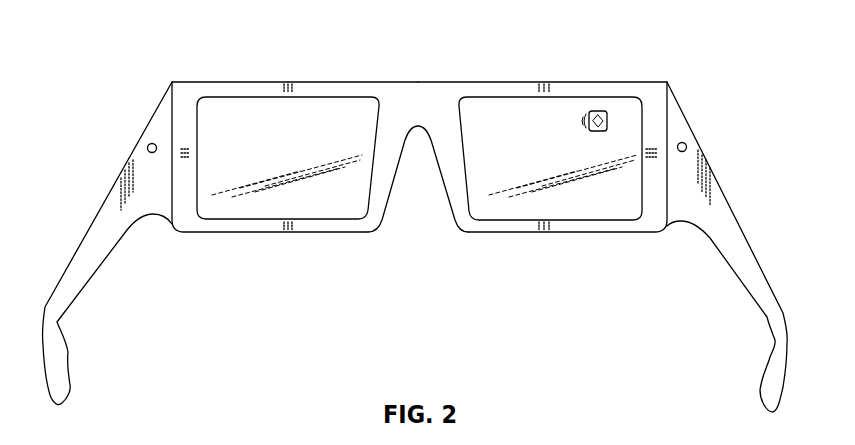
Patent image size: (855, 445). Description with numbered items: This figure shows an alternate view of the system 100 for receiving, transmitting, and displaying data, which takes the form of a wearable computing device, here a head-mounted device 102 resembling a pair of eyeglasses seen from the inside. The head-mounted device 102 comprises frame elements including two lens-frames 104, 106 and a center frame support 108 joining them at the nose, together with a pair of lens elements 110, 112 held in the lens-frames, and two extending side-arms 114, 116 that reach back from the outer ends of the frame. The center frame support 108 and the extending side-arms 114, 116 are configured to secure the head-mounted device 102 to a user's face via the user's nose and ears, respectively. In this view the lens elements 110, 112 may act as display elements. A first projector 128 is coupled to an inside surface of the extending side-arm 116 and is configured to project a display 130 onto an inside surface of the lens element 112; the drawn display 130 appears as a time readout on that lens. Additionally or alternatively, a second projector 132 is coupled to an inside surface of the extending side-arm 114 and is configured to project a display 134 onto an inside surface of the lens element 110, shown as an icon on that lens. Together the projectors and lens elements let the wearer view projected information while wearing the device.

The system 100 is at (640, 333).
The head-mounted device 102 is at (215, 54).
The lens-frame 104 is at (630, 233).
The lens-frame 106 is at (215, 233).
The center frame support 108 is at (421, 81).
The lens element 110 is at (523, 210).
The lens element 112 is at (305, 210).
The extending side-arm 114 is at (720, 184).
The extending side-arm 116 is at (97, 212).
The first projector 128 is at (146, 147).
The display 130 is at (281, 140).
The second projector 132 is at (688, 146).
The display 134 is at (589, 133).